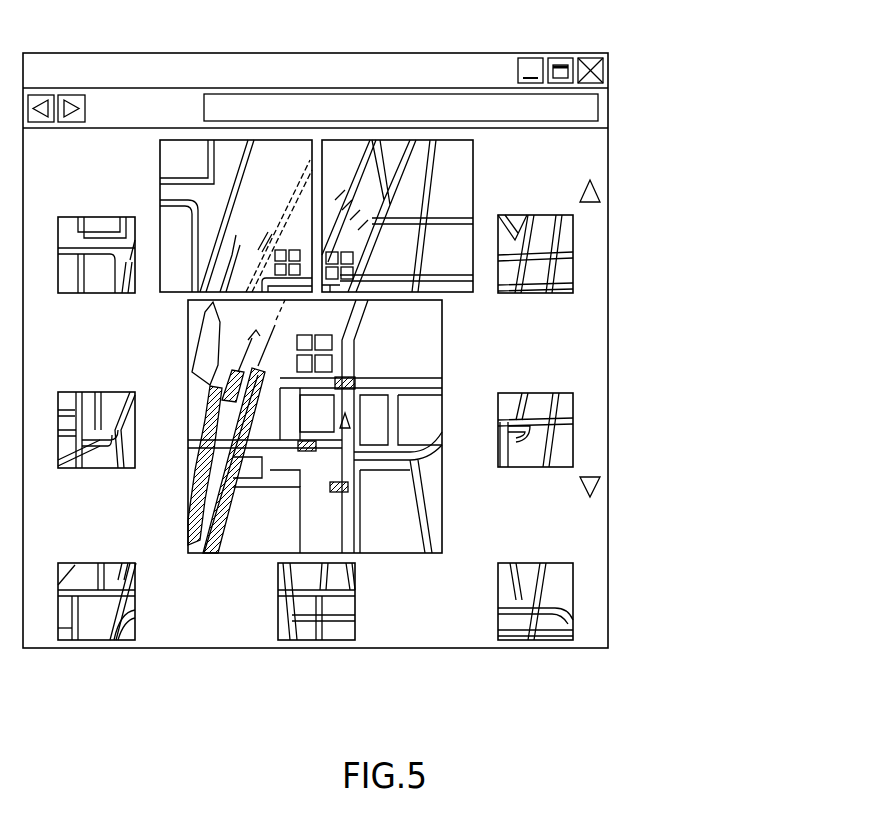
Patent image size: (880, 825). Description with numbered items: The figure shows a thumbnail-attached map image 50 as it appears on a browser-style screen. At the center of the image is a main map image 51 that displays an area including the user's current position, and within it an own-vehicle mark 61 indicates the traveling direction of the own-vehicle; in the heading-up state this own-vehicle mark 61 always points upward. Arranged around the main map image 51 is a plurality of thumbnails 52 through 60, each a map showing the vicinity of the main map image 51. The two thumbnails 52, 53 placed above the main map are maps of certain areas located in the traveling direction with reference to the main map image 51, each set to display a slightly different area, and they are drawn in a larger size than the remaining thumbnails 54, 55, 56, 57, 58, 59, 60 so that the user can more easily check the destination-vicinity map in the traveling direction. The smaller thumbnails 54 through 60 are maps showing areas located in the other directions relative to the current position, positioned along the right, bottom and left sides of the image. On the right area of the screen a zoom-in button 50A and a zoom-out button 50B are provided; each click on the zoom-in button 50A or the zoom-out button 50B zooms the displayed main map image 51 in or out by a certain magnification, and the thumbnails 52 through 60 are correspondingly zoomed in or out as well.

The thumbnail-attached map image 50 is at (514, 43).
The zoom-in button 50A is at (598, 188).
The zoom-out button 50B is at (600, 485).
The main map image 51 is at (442, 330).
The thumbnail 52 is at (160, 164).
The thumbnail 53 is at (473, 165).
The thumbnail 54 is at (573, 250).
The thumbnail 55 is at (573, 425).
The thumbnail 56 is at (573, 618).
The thumbnail 57 is at (296, 640).
The thumbnail 58 is at (80, 640).
The thumbnail 59 is at (85, 468).
The thumbnail 60 is at (85, 293).
The own-vehicle mark 61 is at (350, 422).